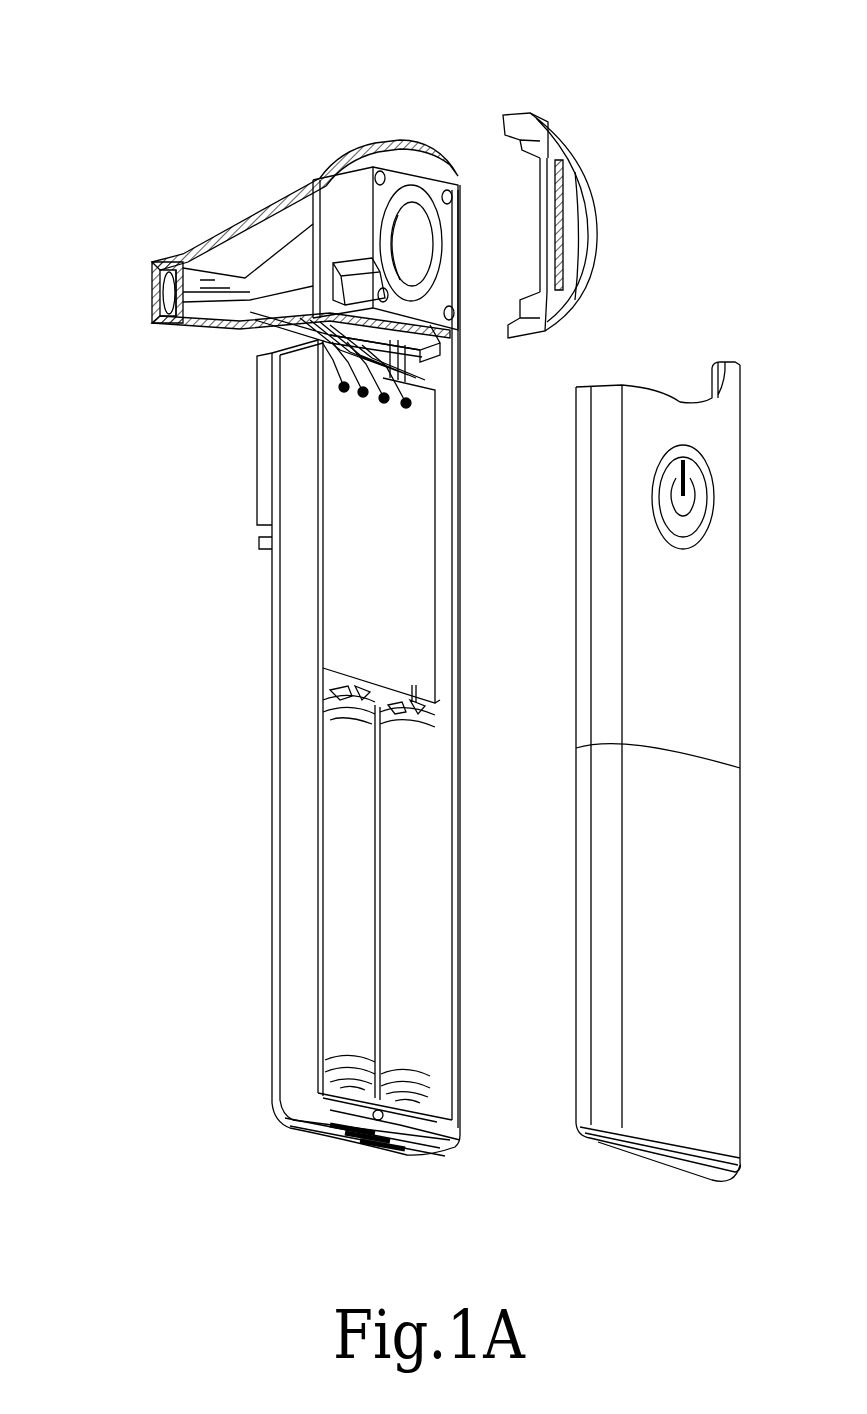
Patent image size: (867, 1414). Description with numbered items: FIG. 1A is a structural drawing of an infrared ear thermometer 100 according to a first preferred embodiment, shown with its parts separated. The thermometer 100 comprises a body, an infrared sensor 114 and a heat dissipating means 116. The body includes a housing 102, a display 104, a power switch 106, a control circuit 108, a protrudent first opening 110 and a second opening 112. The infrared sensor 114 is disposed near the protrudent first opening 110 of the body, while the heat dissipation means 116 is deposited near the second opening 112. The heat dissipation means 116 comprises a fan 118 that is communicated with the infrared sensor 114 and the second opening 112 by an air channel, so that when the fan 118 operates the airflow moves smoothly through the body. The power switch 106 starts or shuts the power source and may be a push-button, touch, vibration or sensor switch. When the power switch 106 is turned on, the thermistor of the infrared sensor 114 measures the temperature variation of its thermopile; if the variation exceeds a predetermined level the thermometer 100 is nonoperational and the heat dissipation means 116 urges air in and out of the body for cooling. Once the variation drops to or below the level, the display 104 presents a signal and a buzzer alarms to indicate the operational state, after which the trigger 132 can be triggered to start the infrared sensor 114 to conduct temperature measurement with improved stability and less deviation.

The infrared ear thermometer 100 is at (357, 125).
The housing 102 is at (293, 1075).
The display 104 is at (258, 500).
The power switch 106 is at (685, 497).
The control circuit 108 is at (403, 550).
The protrudent first opening 110 is at (150, 300).
The second opening 112 is at (477, 262).
The infrared sensor 114 is at (165, 268).
The heat dissipating means 116 is at (398, 160).
The fan 118 is at (418, 247).
The trigger 132 is at (258, 548).